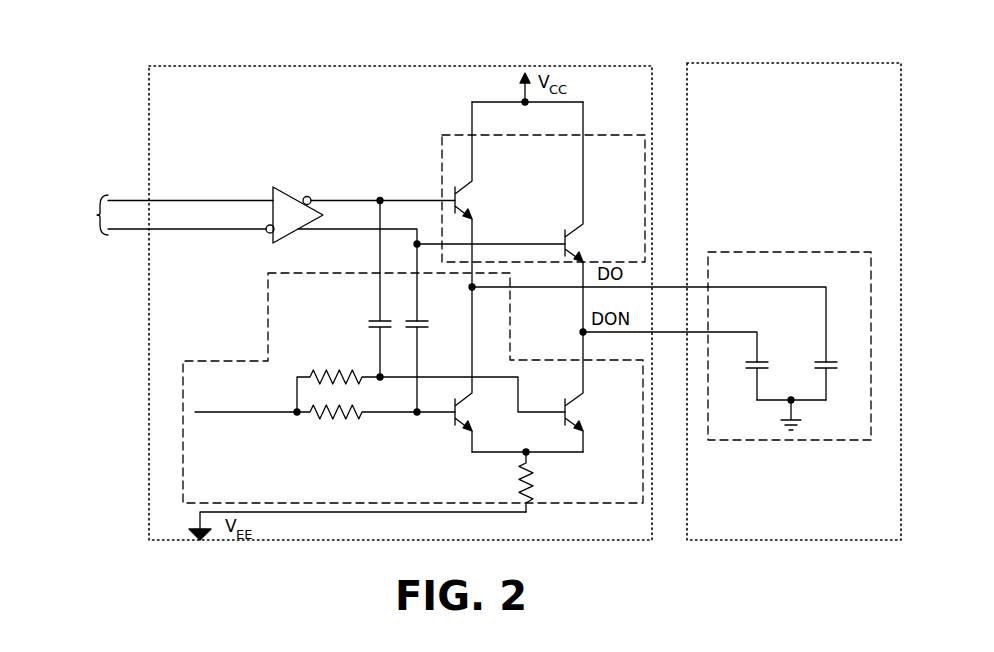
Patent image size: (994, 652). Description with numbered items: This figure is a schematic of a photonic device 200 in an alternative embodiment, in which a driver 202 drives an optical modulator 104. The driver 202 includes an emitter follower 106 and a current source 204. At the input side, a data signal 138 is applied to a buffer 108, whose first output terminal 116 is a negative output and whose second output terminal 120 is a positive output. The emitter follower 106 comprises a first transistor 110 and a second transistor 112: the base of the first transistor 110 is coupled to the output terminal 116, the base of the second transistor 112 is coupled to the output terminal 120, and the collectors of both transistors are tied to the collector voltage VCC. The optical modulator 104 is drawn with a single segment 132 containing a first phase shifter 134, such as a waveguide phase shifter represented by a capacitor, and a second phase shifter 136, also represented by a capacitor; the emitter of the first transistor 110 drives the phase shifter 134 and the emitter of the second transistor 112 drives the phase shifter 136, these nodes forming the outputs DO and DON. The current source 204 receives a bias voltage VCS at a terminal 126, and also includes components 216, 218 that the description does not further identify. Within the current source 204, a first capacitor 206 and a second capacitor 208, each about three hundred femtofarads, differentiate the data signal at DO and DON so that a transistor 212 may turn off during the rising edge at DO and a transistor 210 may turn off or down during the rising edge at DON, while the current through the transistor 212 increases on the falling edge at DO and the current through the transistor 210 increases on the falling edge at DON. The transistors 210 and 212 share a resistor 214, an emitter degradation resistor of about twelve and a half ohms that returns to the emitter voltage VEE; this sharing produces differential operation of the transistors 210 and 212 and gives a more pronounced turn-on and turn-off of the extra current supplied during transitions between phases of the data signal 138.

The photonic device 200 is at (722, 588).
The driver 202 is at (280, 66).
The optical modulator 104 is at (803, 63).
The emitter follower 106 is at (443, 135).
The buffer 108 is at (283, 187).
The first transistor 110 is at (470, 197).
The second transistor 112 is at (576, 232).
The first output terminal 116 is at (388, 198).
The second output terminal 120 is at (352, 232).
The terminal 126 is at (230, 418).
The segment 132 is at (815, 250).
The first phase shifter 134 is at (832, 360).
The second phase shifter 136 is at (764, 360).
The data signal 138 is at (167, 215).
The current source 204 is at (206, 361).
The first capacitor 206 is at (376, 318).
The second capacitor 208 is at (421, 319).
The transistor 210 is at (579, 408).
The transistor 212 is at (470, 412).
The resistor 214 is at (536, 476).
The first base resistor 216 is at (321, 371).
The second base resistor 218 is at (339, 422).